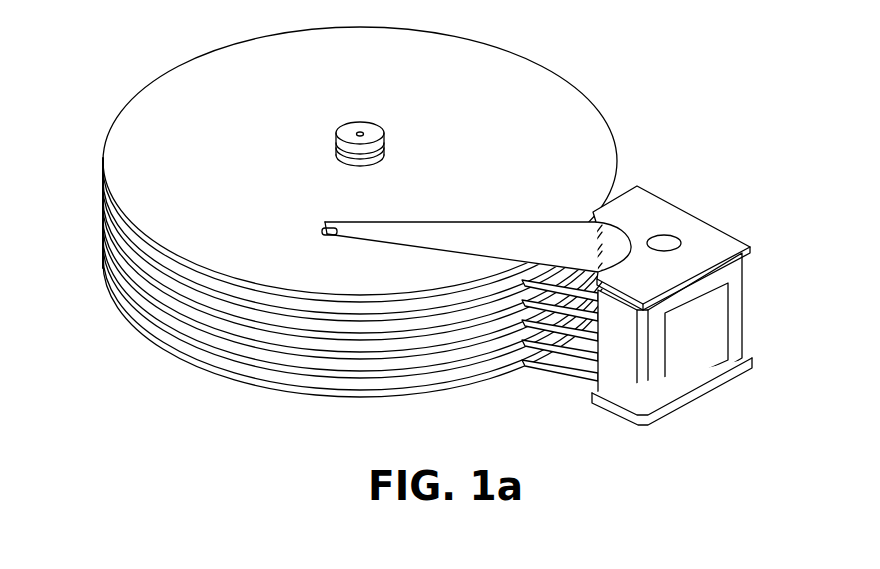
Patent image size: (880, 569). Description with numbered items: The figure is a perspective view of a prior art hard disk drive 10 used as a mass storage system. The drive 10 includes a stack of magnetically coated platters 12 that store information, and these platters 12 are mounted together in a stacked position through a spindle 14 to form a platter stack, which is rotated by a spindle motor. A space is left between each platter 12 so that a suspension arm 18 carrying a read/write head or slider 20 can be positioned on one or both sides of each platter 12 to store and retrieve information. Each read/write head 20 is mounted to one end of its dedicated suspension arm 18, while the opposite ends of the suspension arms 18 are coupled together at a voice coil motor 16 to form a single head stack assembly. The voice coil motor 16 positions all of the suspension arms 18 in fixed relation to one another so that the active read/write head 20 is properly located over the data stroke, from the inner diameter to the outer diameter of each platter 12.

The drive 10 is at (656, 89).
The magnetically coated platters 12 is at (88, 148).
The spindle 14 is at (357, 128).
The voice coil motor 16 is at (706, 230).
The suspension arm 18 is at (484, 229).
The read/write head or slider 20 is at (321, 237).